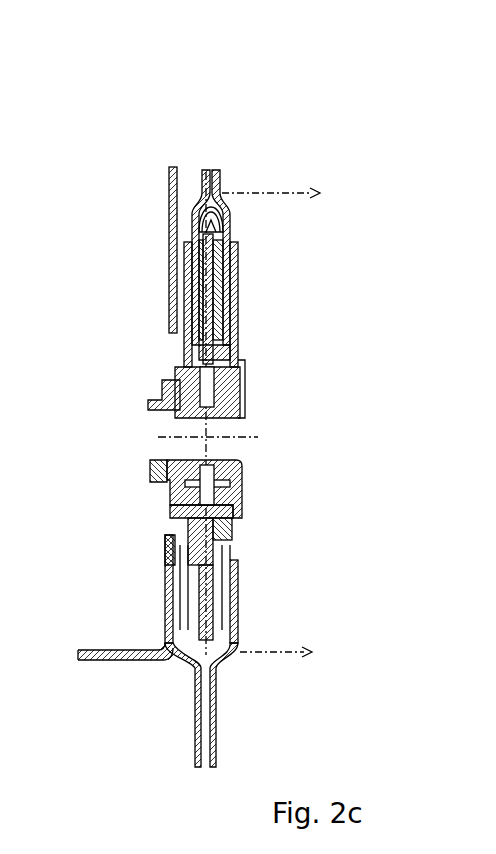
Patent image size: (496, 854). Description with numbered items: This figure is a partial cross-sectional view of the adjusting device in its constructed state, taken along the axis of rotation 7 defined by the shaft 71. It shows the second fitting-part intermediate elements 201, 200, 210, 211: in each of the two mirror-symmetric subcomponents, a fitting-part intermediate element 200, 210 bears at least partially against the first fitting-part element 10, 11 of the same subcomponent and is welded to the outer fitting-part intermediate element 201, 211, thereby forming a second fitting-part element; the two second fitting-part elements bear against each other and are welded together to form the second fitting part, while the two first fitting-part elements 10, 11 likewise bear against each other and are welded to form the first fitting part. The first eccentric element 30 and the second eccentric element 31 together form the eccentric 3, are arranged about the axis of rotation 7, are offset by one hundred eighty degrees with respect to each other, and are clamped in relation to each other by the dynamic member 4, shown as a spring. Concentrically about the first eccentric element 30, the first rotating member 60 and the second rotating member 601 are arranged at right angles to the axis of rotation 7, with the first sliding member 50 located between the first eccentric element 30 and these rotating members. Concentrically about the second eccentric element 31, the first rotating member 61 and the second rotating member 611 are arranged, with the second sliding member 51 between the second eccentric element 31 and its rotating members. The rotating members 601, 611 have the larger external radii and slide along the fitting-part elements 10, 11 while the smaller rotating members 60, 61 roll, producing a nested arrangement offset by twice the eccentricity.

The eccentric 3 is at (288, 423).
The outer fitting-part intermediate element 201 is at (198, 240).
The fitting-part intermediate element 200 is at (200, 178).
The fitting-part intermediate element 210 is at (218, 178).
The outer fitting-part intermediate element 211 is at (190, 232).
The first fitting-part element 10 is at (210, 252).
The first fitting-part element 11 is at (208, 277).
The second sliding member 51 is at (215, 325).
The second eccentric element 31 is at (213, 352).
The first eccentric element 30 is at (207, 365).
The axis of rotation 7 is at (246, 437).
The second rotating member 601 is at (195, 308).
The first rotating member 60 is at (198, 332).
The first sliding member 50 is at (195, 346).
The shaft 71 is at (187, 405).
The dynamic member 4 is at (200, 483).
The first rotating member 61 is at (208, 525).
The second rotating member 611 is at (214, 548).